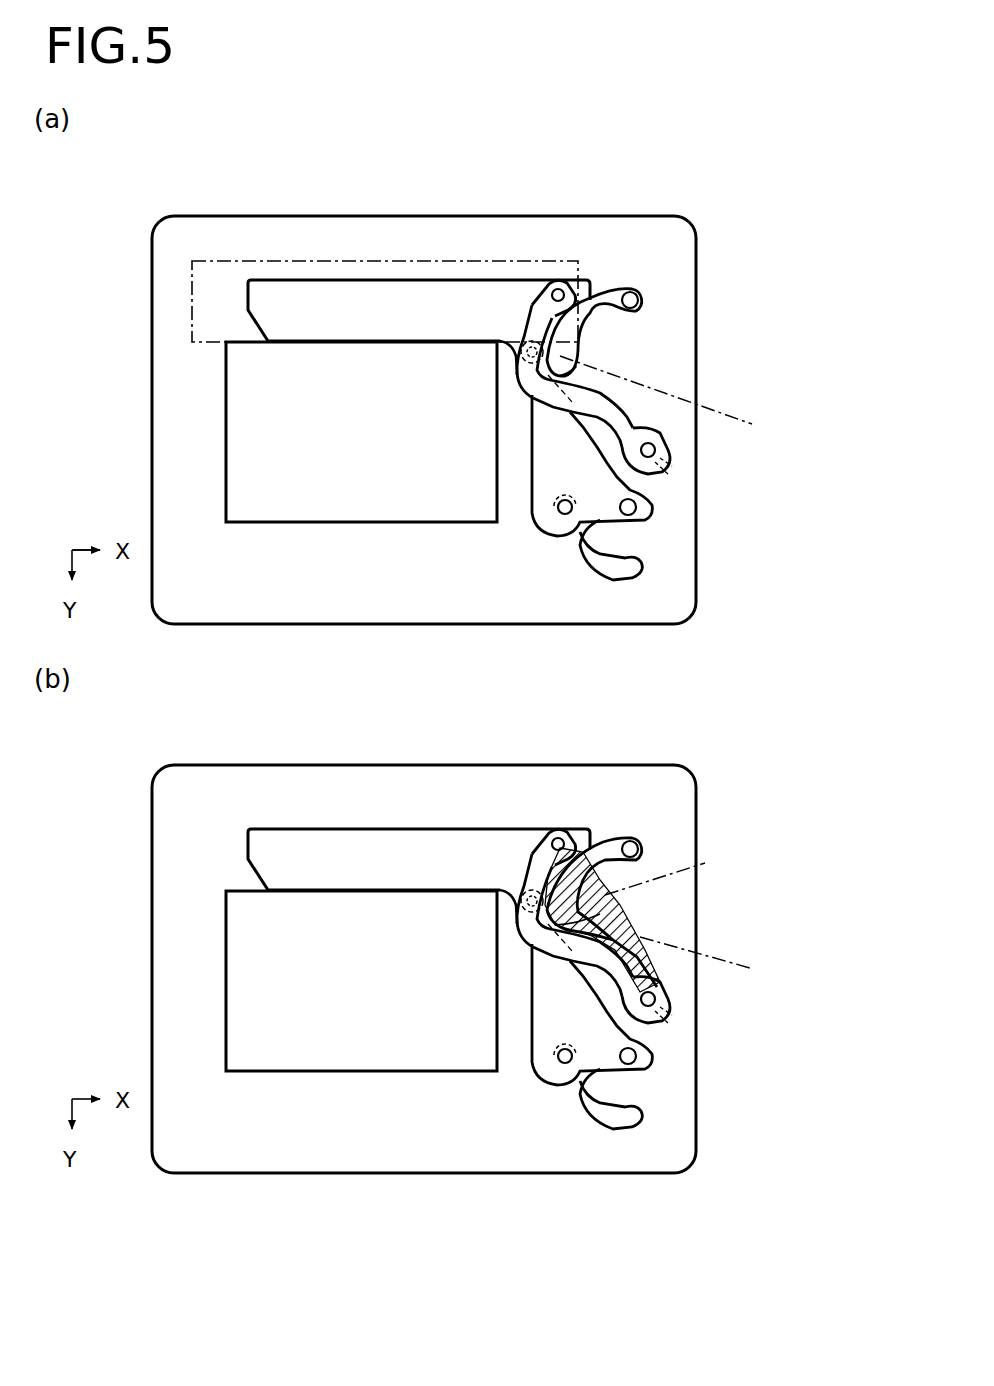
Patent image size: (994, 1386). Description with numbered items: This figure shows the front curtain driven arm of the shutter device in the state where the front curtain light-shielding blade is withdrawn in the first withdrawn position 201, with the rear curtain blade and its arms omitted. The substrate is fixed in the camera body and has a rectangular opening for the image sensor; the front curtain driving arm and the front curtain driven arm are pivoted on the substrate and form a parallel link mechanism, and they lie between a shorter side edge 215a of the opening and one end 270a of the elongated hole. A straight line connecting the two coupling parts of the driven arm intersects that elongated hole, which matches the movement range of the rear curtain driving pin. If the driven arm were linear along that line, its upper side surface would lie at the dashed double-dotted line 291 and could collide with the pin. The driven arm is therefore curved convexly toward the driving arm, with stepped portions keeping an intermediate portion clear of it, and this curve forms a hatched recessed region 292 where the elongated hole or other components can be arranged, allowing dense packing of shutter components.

The first withdrawn position 201 is at (385, 262).
The shorter side edge 215a is at (520, 354).
The one end of the elongated hole 270a is at (562, 362).
The dashed double-dotted line 291 is at (668, 884).
The recessed region 292 is at (665, 920).